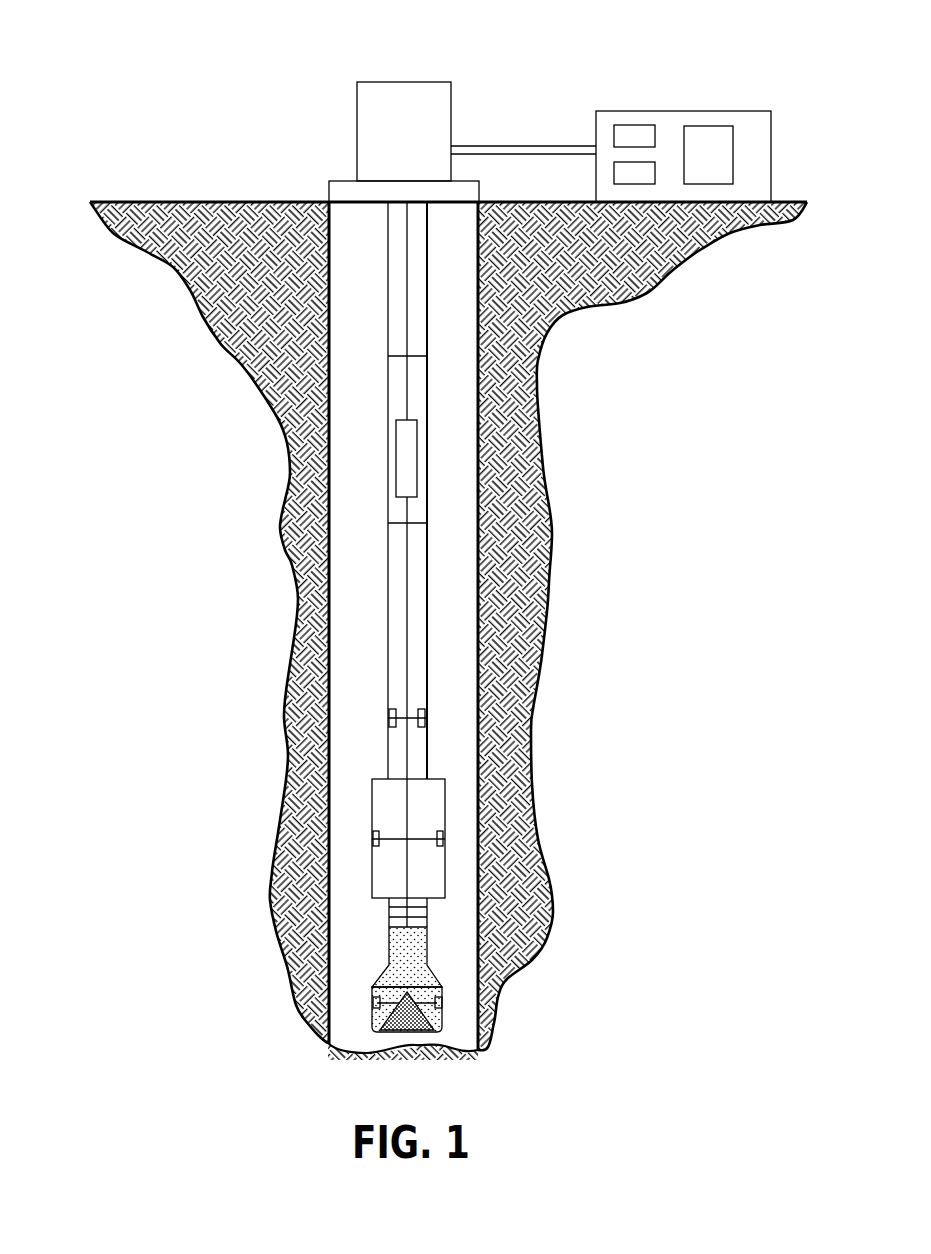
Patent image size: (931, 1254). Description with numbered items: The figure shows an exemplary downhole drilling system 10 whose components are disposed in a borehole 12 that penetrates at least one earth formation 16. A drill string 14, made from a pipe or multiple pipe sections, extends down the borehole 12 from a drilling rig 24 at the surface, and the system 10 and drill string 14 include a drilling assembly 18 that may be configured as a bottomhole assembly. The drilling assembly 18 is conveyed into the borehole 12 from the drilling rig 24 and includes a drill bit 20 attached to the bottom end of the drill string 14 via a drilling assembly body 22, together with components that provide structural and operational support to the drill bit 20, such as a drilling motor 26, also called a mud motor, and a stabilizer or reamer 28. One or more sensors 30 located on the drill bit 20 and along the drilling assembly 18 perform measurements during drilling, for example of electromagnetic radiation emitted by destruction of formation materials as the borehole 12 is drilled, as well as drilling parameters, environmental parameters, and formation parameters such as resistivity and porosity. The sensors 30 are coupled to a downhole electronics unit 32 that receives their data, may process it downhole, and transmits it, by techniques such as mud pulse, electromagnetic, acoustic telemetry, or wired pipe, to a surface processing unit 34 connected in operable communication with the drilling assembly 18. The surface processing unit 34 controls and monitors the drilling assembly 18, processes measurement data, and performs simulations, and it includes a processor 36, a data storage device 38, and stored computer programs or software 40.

The downhole drilling system 10 is at (238, 88).
The borehole 12 is at (460, 522).
The drill string 14 is at (387, 345).
The earth formation 16 is at (243, 322).
The drilling assembly 18 is at (345, 908).
The drill bit 20 is at (402, 1032).
The drilling assembly body 22 is at (430, 947).
The drilling rig 24 is at (393, 95).
The drilling motor 26 is at (415, 687).
The stabilizer or reamer 28 is at (432, 865).
The sensors 30 is at (388, 716).
The downhole electronics unit 32 is at (428, 443).
The surface processing unit 34 is at (742, 111).
The processor 36 is at (632, 132).
The data storage device 38 is at (705, 130).
The software 40 is at (623, 168).